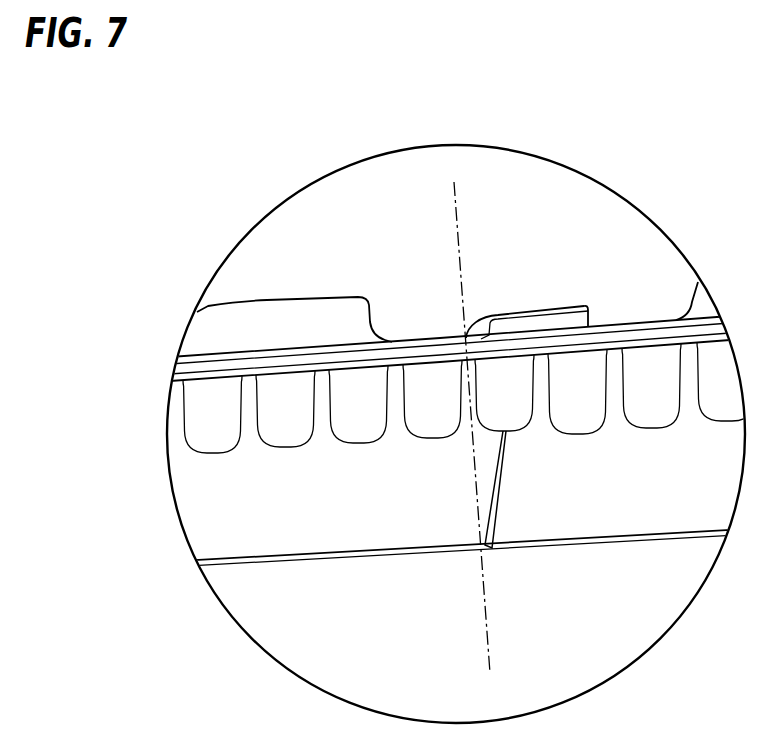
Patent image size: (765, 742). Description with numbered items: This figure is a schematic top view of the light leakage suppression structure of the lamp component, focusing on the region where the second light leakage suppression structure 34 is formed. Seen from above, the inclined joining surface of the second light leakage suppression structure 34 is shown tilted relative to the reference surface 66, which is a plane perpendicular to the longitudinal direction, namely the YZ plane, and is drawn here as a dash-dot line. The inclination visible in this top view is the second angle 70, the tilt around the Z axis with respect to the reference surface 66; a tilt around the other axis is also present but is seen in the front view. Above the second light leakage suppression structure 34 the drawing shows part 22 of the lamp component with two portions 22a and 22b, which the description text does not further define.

The plate assembly 22 is at (463, 323).
The first plate 22a is at (418, 336).
The second plate flange 22b is at (611, 321).
The second light leakage suppression structure 34 is at (491, 556).
The reference surface 66 is at (486, 620).
The second angle 70 is at (475, 469).